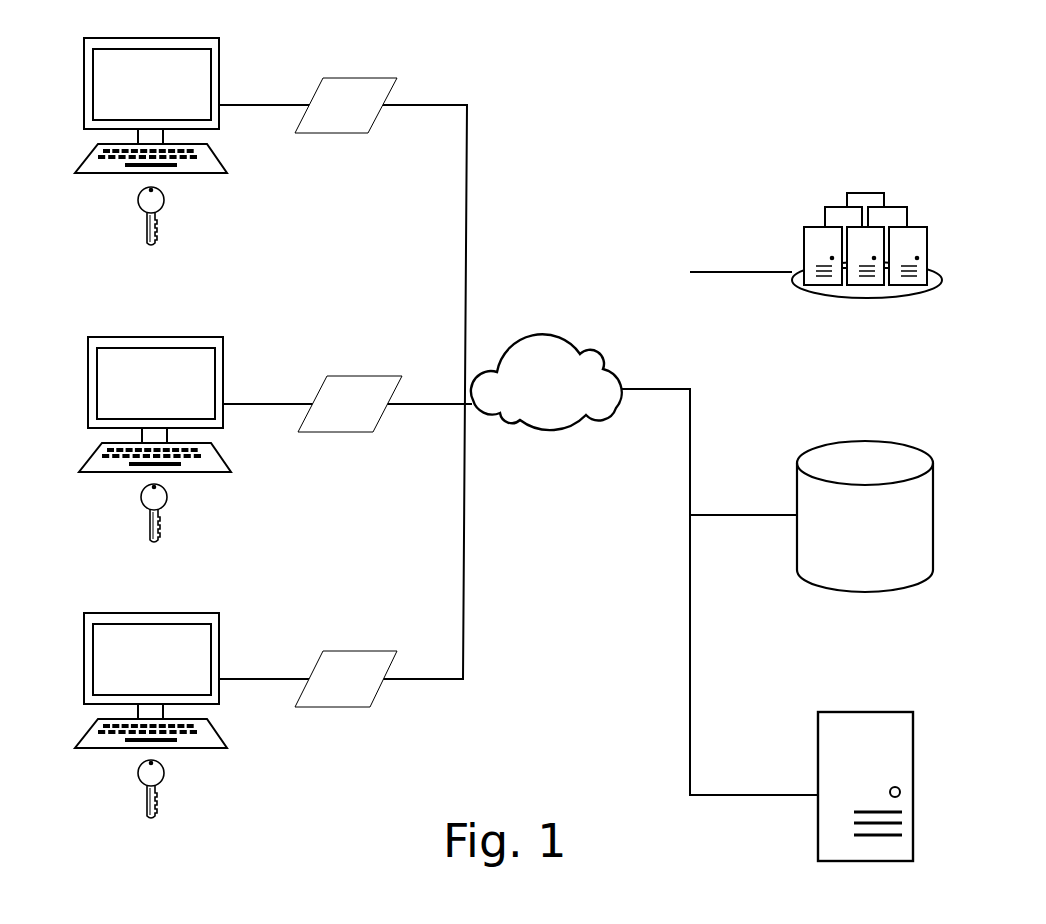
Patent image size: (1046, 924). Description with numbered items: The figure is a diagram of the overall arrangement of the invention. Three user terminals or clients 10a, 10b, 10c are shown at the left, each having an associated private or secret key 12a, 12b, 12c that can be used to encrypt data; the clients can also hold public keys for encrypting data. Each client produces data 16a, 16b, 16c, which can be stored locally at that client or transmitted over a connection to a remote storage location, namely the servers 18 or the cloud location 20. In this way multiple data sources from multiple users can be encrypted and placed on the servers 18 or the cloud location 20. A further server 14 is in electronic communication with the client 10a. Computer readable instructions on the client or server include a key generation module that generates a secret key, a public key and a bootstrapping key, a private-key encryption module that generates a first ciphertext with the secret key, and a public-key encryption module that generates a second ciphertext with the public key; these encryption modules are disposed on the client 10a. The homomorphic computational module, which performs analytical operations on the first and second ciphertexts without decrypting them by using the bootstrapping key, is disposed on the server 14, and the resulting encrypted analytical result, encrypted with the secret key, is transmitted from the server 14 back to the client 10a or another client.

The client 10a is at (85, 78).
The client 10b is at (88, 376).
The client 10c is at (84, 651).
The secret key 12a is at (148, 228).
The secret key 12b is at (151, 525).
The secret key 12c is at (148, 799).
The data 16a is at (365, 78).
The data 16b is at (369, 376).
The data 16c is at (365, 651).
The servers 18 is at (804, 230).
The cloud location 20 is at (797, 496).
The server 14 is at (818, 752).